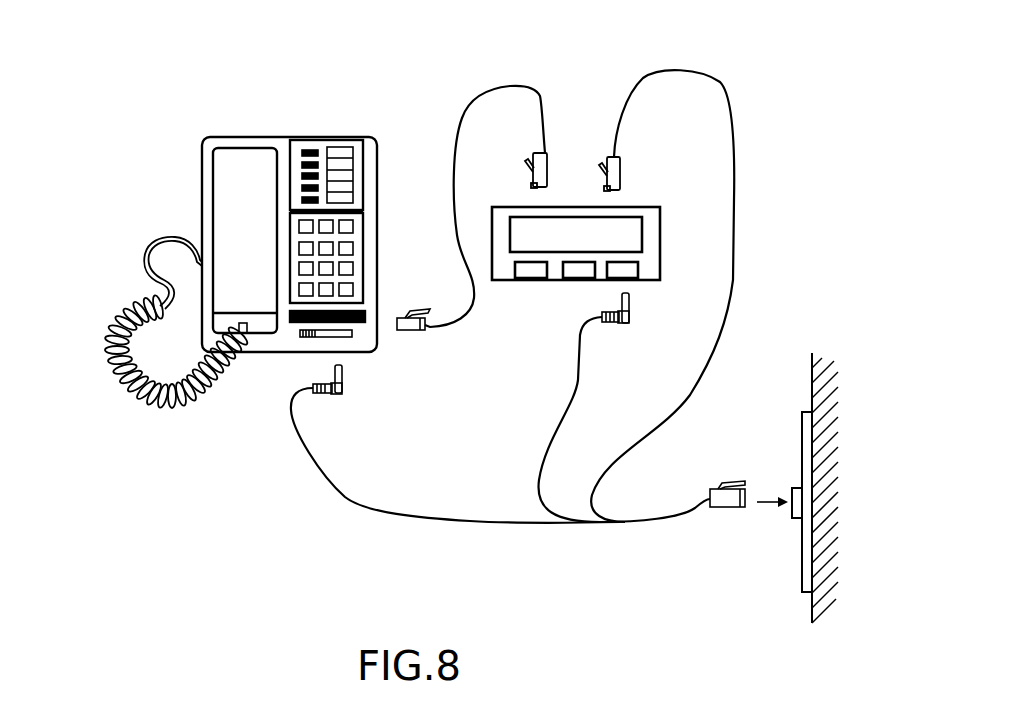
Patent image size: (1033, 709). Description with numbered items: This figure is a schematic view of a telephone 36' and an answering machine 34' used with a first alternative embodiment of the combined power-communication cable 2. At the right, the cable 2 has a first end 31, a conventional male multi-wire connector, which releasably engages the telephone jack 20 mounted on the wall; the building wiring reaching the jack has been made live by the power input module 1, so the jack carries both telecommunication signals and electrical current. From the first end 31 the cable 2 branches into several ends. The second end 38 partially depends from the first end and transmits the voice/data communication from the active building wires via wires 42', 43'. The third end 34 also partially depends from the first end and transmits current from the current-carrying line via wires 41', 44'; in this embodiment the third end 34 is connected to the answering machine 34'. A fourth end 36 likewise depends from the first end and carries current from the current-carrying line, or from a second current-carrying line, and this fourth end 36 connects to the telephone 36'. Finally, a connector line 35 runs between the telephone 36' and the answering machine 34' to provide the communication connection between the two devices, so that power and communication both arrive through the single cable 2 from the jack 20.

The telephone 36' is at (240, 240).
The connector line 35 is at (462, 118).
The second end 38 is at (601, 146).
The answering machine 34' is at (599, 209).
The wire 42' is at (724, 296).
The wire 43' is at (724, 296).
The third end 34 is at (615, 407).
The wire 41' is at (442, 341).
The wire 44' is at (442, 341).
The fourth end 36 is at (352, 408).
The combined power-communication cable 2 is at (605, 543).
The first end 31 is at (703, 468).
The power input module 1 is at (741, 488).
The telephone jack 20 is at (803, 551).